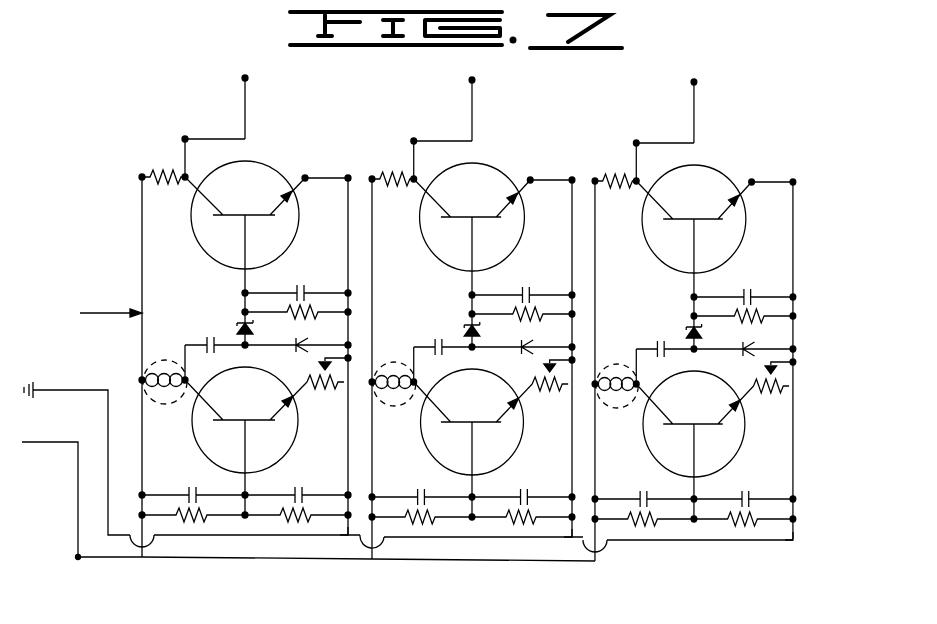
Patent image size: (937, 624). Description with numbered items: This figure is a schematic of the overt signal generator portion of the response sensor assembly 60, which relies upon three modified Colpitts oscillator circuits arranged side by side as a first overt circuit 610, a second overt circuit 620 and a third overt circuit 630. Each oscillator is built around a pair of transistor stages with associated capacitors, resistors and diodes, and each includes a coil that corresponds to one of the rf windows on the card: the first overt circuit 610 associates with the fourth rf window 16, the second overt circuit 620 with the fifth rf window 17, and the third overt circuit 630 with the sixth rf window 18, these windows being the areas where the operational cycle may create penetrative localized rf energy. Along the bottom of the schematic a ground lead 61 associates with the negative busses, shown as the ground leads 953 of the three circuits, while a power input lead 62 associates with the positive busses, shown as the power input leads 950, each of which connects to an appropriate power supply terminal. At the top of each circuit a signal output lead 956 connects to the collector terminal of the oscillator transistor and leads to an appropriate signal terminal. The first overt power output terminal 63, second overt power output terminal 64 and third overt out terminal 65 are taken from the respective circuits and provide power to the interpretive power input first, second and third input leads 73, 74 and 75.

The fourth rf window 16 is at (151, 364).
The fifth rf window 17 is at (380, 367).
The sixth rf window 18 is at (603, 367).
The response sensor assembly 60 is at (96, 314).
The ground lead 61 is at (36, 390).
The power input lead 62 is at (45, 442).
The first overt power output terminal 63 is at (182, 138).
The second overt power output terminal 64 is at (410, 142).
The third overt out terminal 65 is at (638, 144).
The first input lead 73 is at (244, 100).
The second input lead 74 is at (470, 105).
The third input lead 75 is at (697, 108).
The first overt circuit 610 is at (320, 142).
The second overt circuit 620 is at (542, 147).
The third overt circuit 630 is at (762, 147).
The power input lead 950 is at (146, 532).
The ground lead 953 is at (340, 528).
The signal output lead 956 is at (182, 156).